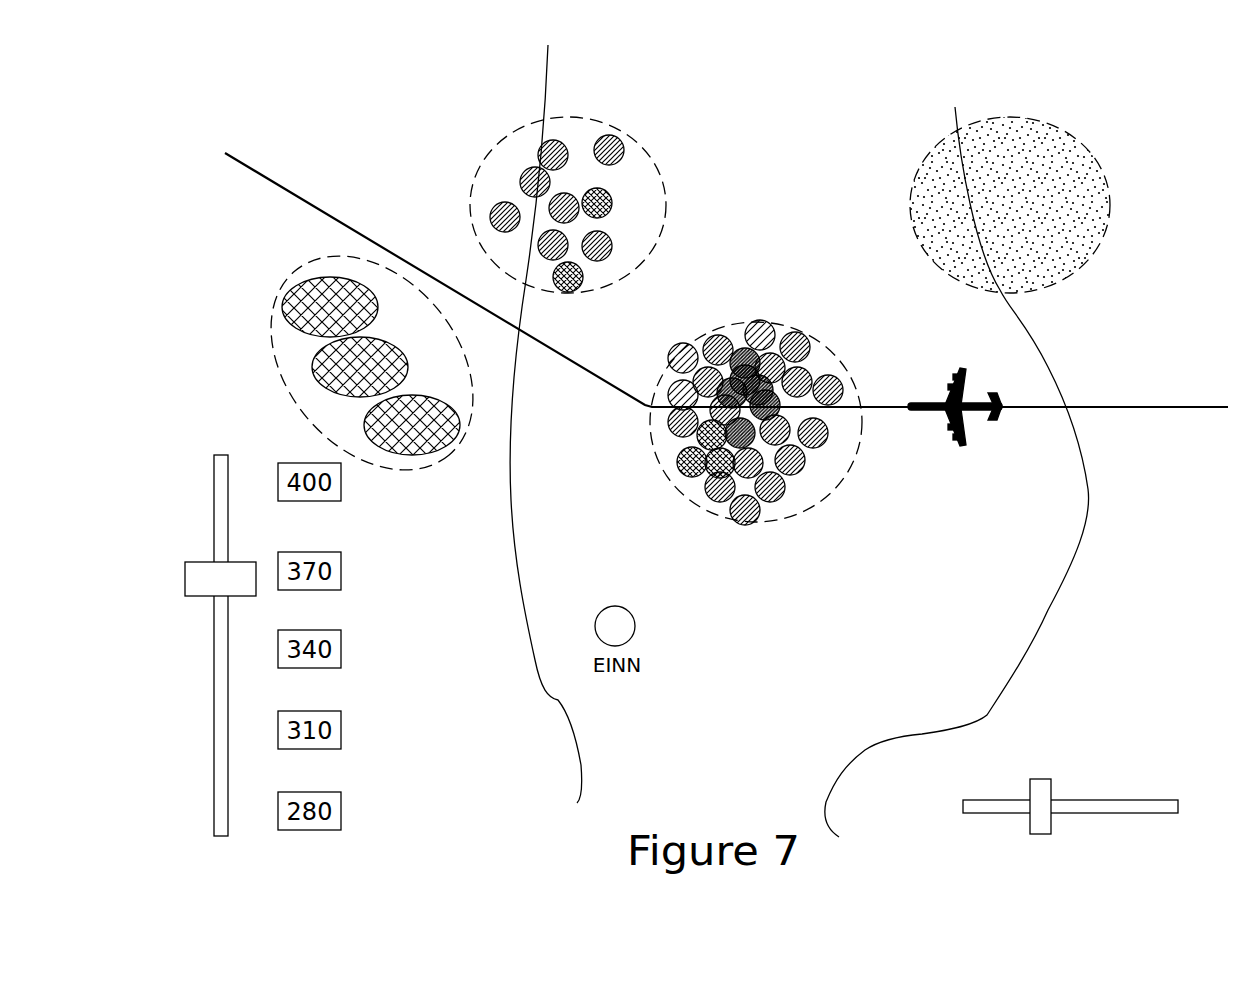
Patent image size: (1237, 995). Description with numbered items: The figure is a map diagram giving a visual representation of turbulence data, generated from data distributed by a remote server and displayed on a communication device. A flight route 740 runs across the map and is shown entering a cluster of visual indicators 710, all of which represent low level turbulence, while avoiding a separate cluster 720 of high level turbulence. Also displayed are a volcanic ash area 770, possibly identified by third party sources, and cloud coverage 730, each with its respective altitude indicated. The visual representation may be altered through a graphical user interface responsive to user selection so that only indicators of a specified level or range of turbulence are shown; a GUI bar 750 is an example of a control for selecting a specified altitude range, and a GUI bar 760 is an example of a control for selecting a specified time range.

The cluster of visual indicators 710 is at (730, 324).
The cluster 720 is at (473, 172).
The cloud coverage 730 is at (295, 275).
The flight route 740 is at (890, 400).
The GUI bar 750 is at (222, 452).
The GUI bar 760 is at (1040, 777).
The volcanic ash area 770 is at (930, 158).